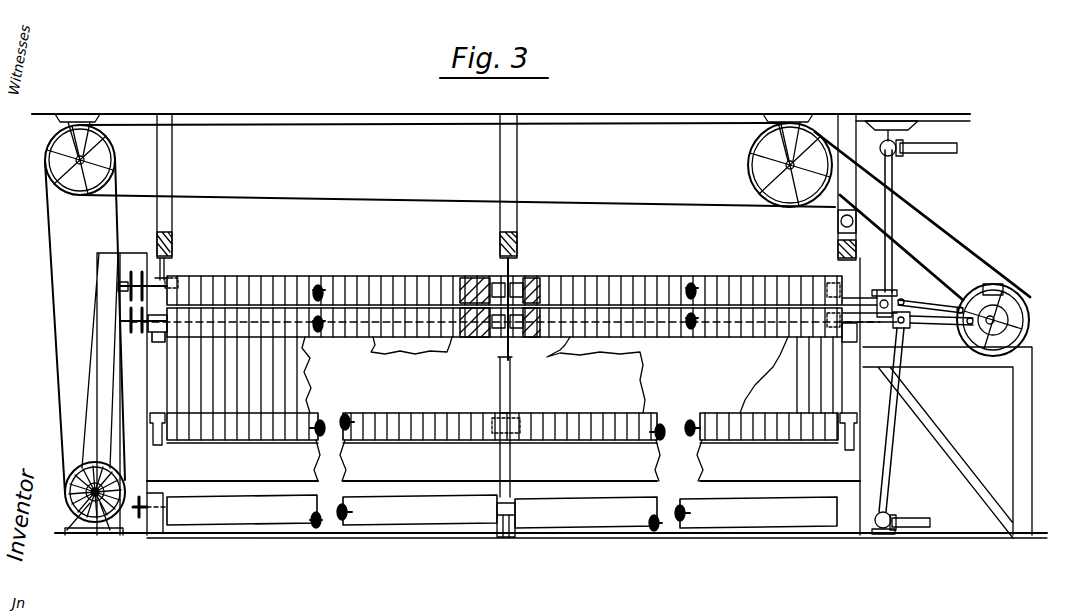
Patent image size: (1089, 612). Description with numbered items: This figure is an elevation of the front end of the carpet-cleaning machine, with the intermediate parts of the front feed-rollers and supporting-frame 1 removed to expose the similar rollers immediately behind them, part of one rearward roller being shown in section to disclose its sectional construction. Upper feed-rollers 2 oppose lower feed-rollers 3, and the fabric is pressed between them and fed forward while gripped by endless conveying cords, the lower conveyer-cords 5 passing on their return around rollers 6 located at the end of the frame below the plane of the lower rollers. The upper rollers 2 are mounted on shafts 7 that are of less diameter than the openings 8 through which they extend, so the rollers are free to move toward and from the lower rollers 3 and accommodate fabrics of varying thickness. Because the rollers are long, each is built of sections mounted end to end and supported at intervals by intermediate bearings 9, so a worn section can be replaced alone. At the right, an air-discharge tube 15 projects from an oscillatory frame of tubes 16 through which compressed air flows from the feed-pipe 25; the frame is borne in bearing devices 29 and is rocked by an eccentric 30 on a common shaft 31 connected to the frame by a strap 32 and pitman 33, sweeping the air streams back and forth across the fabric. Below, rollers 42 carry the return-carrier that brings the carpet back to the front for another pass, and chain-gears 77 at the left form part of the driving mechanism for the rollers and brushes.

The supporting-frame 1 is at (540, 375).
The upper feed-rollers 2 is at (273, 278).
The lower feed-rollers 3 is at (215, 330).
The lower conveyer-cords 5 is at (504, 375).
The rollers 6 is at (268, 430).
The shafts 7 is at (323, 288).
The openings 8 is at (478, 281).
The intermediate bearings 9 is at (512, 278).
The discharge-tubes 15 is at (865, 298).
The oscillatory frame tubes 16 is at (892, 181).
The feed-pipe 25 is at (948, 152).
The bearing devices 29 is at (910, 127).
The eccentrics 30 is at (1004, 298).
The shaft 31 is at (1010, 328).
The straps 32 is at (990, 284).
The pitmen 33 is at (960, 300).
The rollers 42 is at (502, 511).
The chain-gears 77 is at (68, 320).